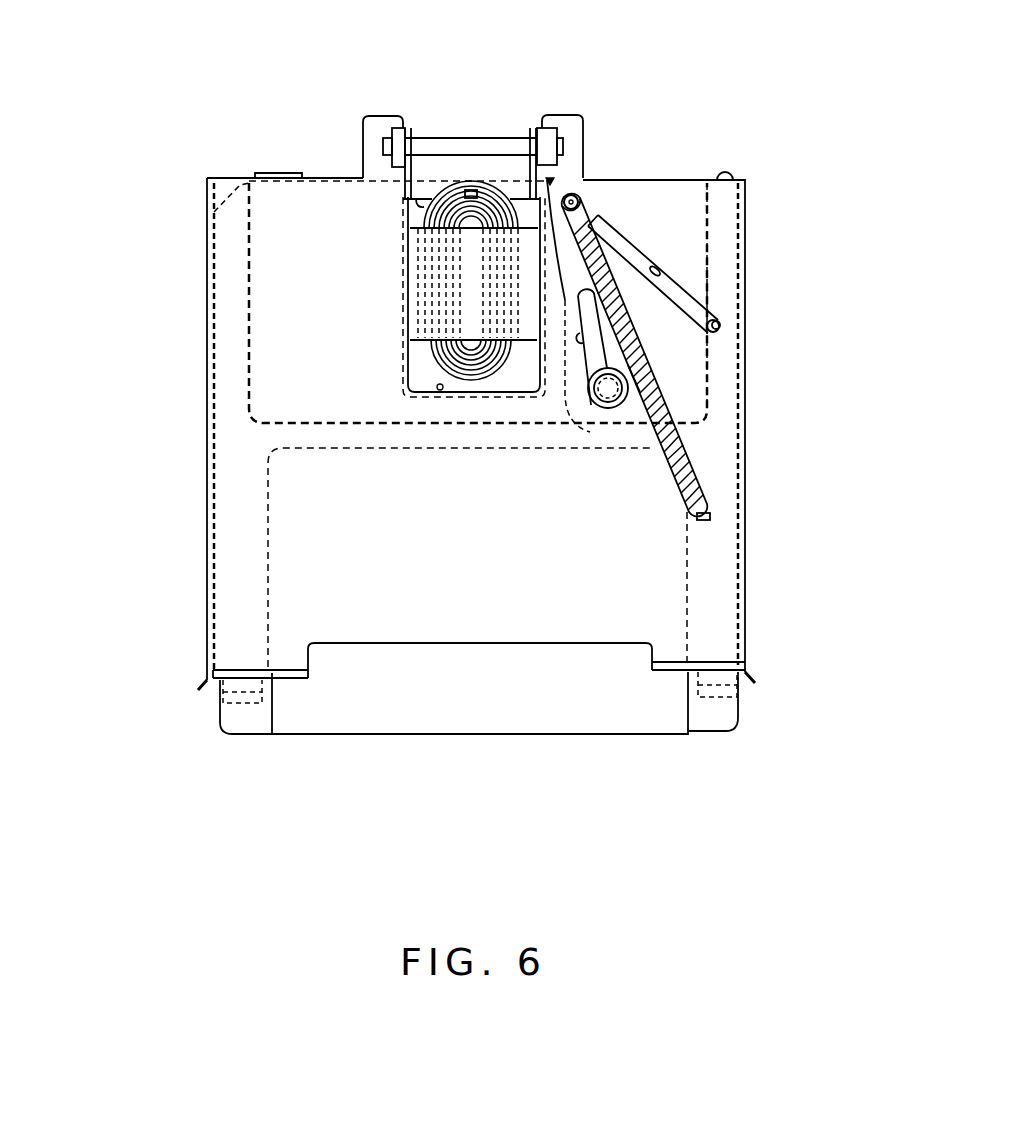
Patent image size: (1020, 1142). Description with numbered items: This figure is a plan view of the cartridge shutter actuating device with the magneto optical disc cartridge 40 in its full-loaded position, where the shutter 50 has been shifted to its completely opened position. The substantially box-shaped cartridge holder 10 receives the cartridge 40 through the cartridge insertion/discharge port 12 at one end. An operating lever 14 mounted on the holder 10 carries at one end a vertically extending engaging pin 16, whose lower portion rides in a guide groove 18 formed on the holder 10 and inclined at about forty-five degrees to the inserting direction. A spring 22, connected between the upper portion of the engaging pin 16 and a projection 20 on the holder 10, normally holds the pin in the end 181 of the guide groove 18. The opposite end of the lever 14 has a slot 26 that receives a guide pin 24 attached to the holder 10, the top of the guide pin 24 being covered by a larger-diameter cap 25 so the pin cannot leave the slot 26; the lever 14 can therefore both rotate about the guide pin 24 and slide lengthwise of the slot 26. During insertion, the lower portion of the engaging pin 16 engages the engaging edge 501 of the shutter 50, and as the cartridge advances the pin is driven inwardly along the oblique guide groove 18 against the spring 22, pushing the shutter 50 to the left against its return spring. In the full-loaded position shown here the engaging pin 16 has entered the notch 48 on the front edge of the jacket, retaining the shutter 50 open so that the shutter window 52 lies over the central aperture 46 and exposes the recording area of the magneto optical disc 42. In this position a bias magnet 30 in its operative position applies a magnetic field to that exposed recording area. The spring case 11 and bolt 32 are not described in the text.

The cartridge holder 10 is at (192, 258).
The spring case 11 is at (437, 391).
The cartridge insertion/discharge port 12 is at (403, 658).
The operating lever 14 is at (597, 203).
The engaging pin 16 is at (573, 196).
The guide groove 18 is at (668, 276).
The end of the guide groove 181 is at (722, 318).
The projection 20 is at (707, 518).
The spring 22 is at (640, 373).
The guide pin 24 is at (613, 410).
The cap 25 is at (606, 392).
The slot 26 is at (588, 338).
The bias magnet 30 is at (386, 266).
The bolt 32 is at (463, 146).
The magneto optical disc cartridge 40 is at (248, 754).
The magneto optical disc 42 is at (420, 203).
The central aperture 46 is at (437, 188).
The notch 48 is at (580, 200).
The shutter 50 is at (332, 322).
The engaging edge of the shutter 501 is at (575, 198).
The shutter window 52 is at (507, 192).